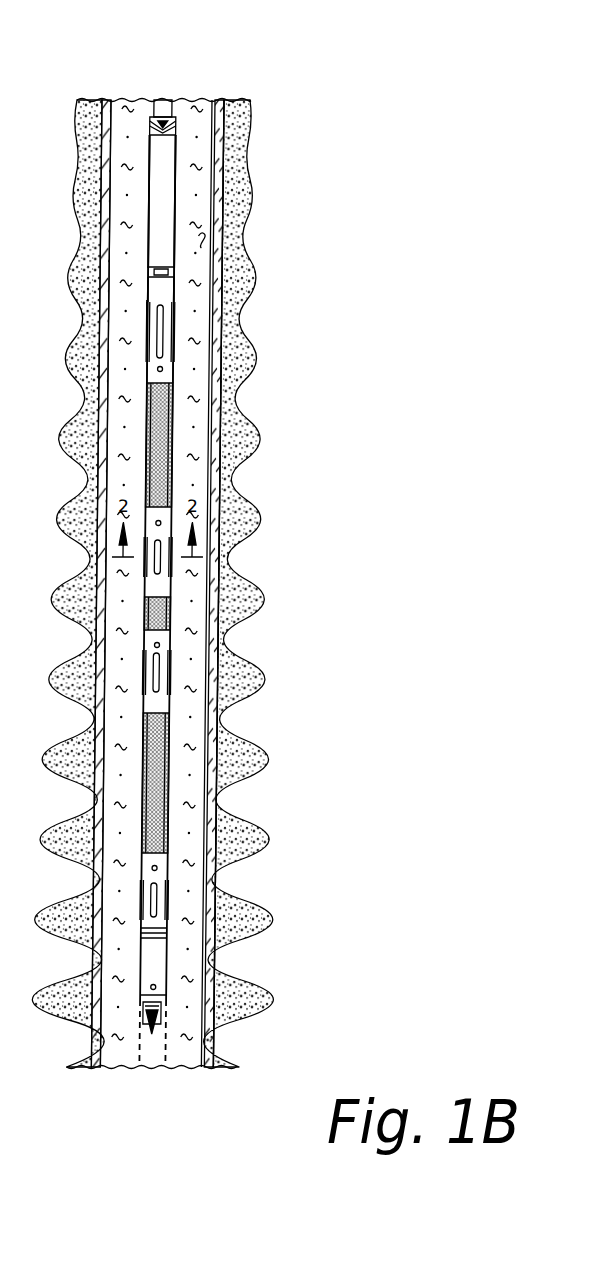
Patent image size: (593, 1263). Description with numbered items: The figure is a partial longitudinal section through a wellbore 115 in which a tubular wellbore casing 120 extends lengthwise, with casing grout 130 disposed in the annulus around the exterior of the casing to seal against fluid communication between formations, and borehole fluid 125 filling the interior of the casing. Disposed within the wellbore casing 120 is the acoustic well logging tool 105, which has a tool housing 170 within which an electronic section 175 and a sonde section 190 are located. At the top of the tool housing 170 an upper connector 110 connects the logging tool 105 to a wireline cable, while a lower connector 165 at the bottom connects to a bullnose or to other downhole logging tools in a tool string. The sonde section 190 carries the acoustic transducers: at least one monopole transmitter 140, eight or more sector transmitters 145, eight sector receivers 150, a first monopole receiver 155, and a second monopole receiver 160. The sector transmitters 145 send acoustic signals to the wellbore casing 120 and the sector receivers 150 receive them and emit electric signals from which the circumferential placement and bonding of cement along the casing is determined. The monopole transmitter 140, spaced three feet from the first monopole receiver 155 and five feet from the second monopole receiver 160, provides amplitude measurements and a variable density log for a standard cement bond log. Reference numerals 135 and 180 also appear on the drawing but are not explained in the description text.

The acoustic well logging tool 105 is at (272, 62).
The upper connector 110 is at (182, 100).
The wellbore 115 is at (247, 132).
The wellbore casing 120 is at (217, 218).
The borehole fluid 125 is at (200, 234).
The casing grout 130 is at (236, 271).
The casing wall 135 is at (222, 299).
The monopole transmitter 140 is at (175, 320).
The sector transmitters 145 is at (175, 352).
The sector receivers 150 is at (174, 572).
The first monopole receiver 155 is at (172, 675).
The second monopole receiver 160 is at (163, 897).
The lower connector 165 is at (162, 1002).
The tool housing 170 is at (157, 203).
The electronic section 175 is at (157, 246).
The coupling sub 180 is at (143, 283).
The sonde section 190 is at (147, 304).